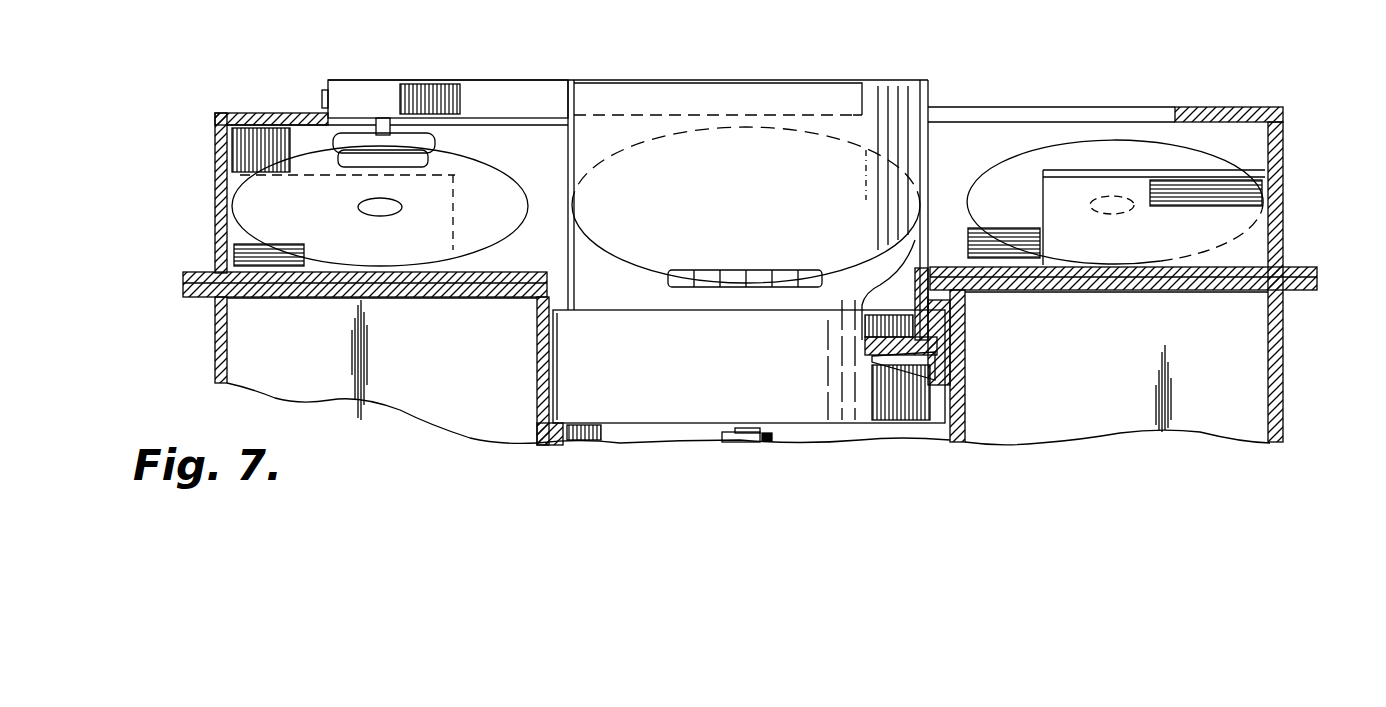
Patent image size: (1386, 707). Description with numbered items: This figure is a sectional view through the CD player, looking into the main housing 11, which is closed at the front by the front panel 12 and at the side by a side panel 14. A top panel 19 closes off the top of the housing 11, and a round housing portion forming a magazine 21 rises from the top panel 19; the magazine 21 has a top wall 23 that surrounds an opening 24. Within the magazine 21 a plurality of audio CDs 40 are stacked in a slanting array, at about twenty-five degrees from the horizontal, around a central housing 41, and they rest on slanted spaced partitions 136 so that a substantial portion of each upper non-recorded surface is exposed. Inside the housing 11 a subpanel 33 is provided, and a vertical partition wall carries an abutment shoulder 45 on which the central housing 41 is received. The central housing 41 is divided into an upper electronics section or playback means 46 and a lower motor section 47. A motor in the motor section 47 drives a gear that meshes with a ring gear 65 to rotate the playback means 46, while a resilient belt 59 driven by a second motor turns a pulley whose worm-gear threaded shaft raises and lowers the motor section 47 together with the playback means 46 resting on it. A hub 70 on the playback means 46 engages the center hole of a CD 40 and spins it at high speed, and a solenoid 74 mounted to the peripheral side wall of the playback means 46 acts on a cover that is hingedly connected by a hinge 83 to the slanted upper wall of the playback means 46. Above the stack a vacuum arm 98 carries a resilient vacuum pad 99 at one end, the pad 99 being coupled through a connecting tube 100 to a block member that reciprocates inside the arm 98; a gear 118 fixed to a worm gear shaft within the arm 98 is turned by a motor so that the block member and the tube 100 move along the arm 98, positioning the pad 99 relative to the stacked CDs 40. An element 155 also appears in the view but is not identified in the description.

The main housing 11 is at (1287, 410).
The front panel 12 is at (1235, 347).
The side panel 14 is at (215, 362).
The top panel 19 is at (305, 285).
The magazine 21 is at (210, 116).
The top wall 23 is at (1250, 107).
The opening 24 is at (1180, 110).
The subpanel 33 is at (1132, 291).
The audio CD 40 is at (275, 195).
The central housing 41 is at (732, 76).
The abutment shoulder 45 is at (963, 407).
The playback means 46 is at (937, 162).
The motor section 47 is at (535, 397).
The resilient belt 59 is at (740, 445).
The ring gear 65 is at (865, 323).
The hub 70 is at (1221, 0).
The solenoid 74 is at (1128, 8).
The hinge 83 is at (757, 270).
The vacuum arm 98 is at (531, 78).
The vacuum pad 99 is at (340, 143).
The connecting tube 100 is at (383, 118).
The gear 118 is at (276, 7).
The slanted spaced partitions 136 is at (222, 262).
The carriage 155 is at (131, 7).